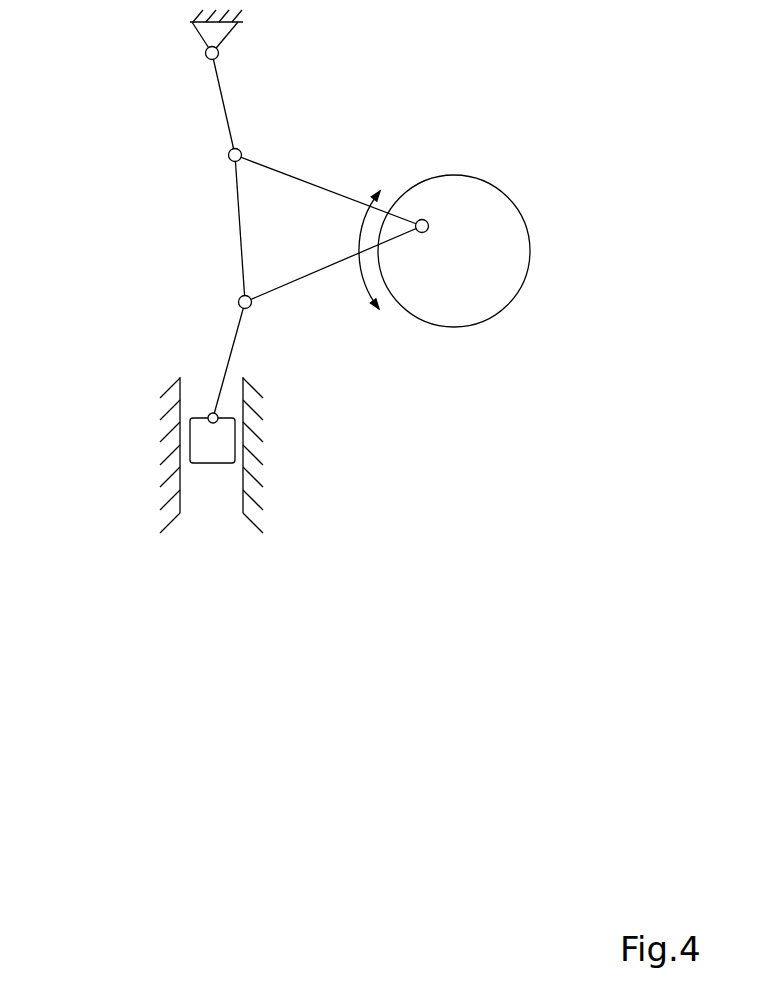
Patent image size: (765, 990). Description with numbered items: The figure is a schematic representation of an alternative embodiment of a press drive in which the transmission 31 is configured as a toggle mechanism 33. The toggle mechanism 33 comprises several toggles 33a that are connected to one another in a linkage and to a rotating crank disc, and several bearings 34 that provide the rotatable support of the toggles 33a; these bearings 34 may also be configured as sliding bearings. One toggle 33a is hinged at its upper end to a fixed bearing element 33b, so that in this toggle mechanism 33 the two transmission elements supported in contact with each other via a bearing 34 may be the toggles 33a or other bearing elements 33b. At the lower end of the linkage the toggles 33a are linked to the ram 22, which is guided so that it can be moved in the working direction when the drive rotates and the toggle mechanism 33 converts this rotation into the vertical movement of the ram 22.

The ram 22 is at (197, 444).
The transmission 31 is at (398, 85).
The toggle mechanism 33 is at (296, 214).
The toggles 33a is at (222, 95).
The bearing elements 33b is at (236, 27).
The bearings 34 is at (206, 55).